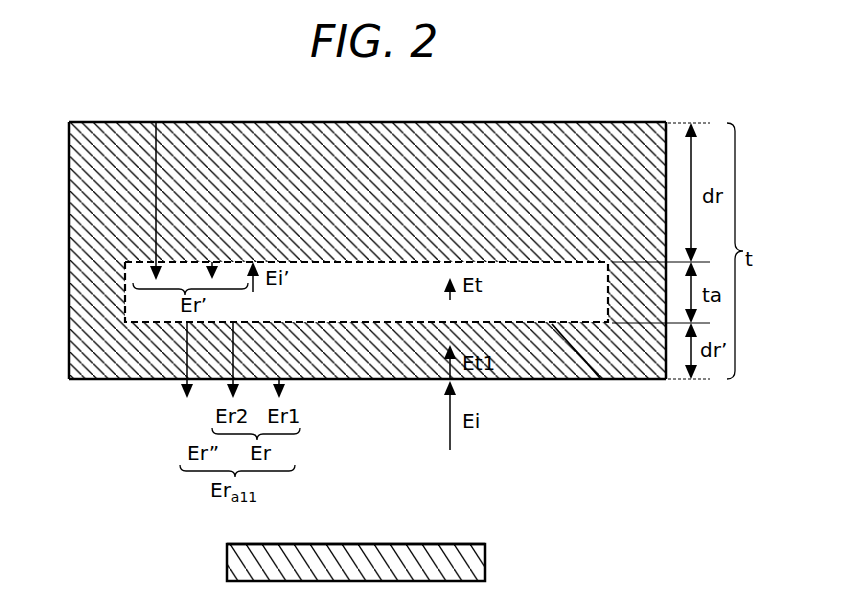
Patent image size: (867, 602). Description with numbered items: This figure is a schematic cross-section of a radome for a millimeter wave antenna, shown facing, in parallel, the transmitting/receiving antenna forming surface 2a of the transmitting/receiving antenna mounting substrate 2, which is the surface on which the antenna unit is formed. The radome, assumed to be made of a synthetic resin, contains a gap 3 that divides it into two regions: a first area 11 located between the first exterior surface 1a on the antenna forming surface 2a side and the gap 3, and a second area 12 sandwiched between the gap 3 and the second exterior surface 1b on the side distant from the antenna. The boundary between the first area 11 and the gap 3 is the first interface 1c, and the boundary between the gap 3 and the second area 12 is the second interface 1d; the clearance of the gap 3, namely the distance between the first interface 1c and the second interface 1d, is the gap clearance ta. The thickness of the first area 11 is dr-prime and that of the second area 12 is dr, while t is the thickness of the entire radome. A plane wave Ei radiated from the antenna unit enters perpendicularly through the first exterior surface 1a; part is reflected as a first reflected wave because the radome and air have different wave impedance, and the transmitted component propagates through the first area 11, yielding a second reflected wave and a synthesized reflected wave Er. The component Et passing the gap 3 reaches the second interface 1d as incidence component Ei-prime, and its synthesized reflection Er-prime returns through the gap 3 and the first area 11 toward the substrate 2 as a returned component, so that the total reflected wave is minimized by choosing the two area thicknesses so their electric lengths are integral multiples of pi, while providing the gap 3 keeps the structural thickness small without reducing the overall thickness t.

The first exterior surface 1a is at (546, 380).
The second exterior surface 1b is at (412, 122).
The first interface 1c is at (600, 380).
The second interface 1d is at (508, 260).
The transmitting/receiving antenna mounting substrate 2 is at (477, 557).
The transmitting/receiving antenna forming surface 2a is at (438, 544).
The gap 3 is at (342, 282).
The first area 11 is at (340, 360).
The second area 12 is at (229, 175).